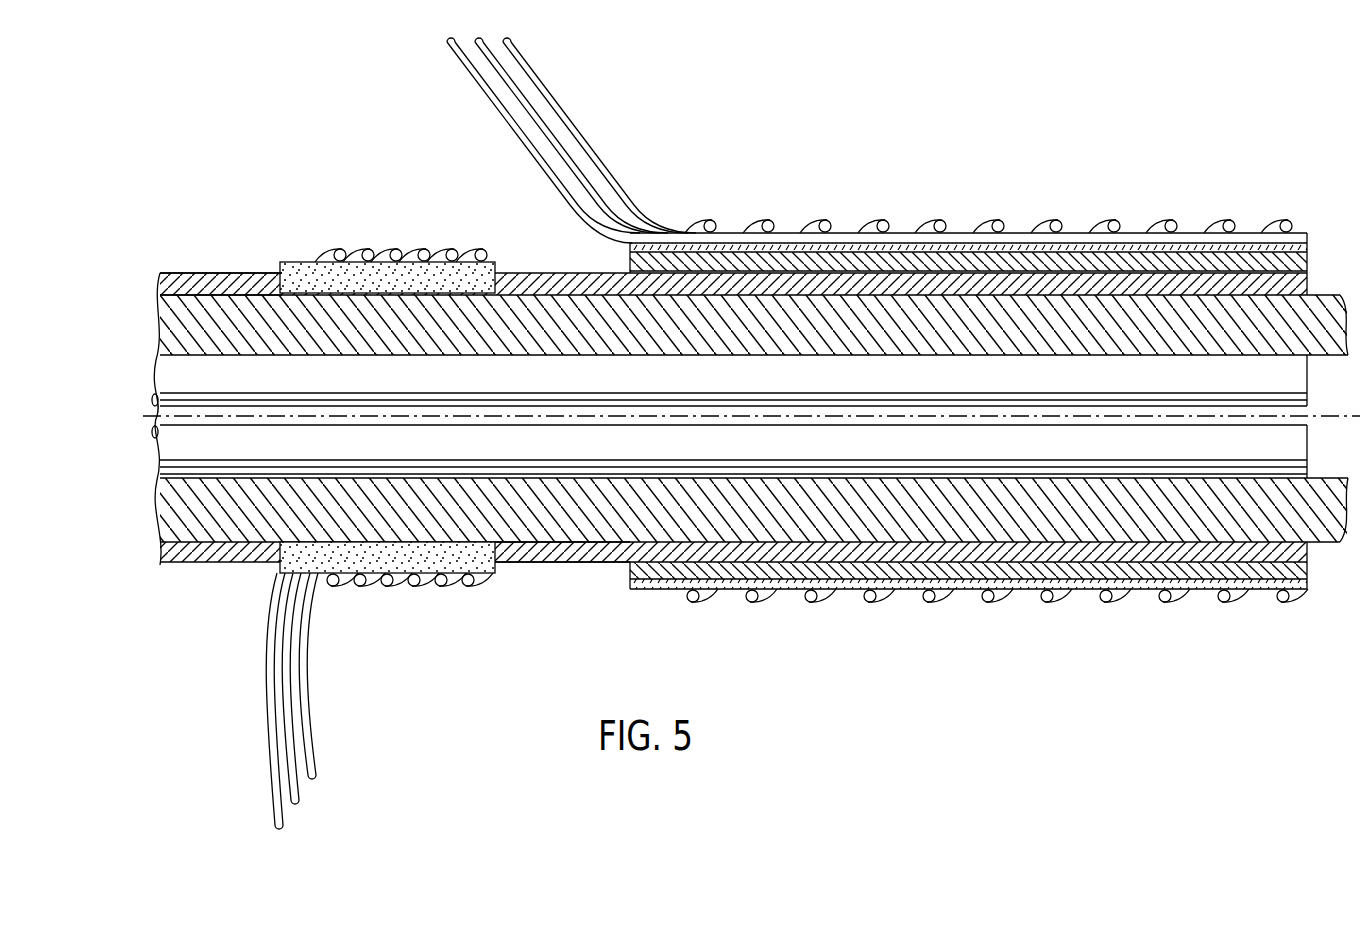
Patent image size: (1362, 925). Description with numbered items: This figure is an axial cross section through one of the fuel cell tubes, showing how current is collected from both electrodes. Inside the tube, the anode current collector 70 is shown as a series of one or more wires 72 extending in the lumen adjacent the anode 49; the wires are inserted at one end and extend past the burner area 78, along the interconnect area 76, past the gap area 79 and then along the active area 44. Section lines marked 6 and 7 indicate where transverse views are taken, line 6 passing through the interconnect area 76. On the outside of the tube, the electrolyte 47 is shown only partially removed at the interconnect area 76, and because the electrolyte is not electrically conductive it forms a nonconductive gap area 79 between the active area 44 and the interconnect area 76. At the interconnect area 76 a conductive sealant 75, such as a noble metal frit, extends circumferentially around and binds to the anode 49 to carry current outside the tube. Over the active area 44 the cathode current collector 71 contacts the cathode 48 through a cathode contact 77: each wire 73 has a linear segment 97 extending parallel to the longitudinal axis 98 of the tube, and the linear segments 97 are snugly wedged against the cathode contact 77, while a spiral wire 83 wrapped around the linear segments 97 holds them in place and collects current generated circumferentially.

The anode current collector 70 is at (143, 426).
The cathode current collector 71 is at (979, 372).
The wires 72 is at (460, 447).
The wire 73 is at (607, 182).
The conductive sealant 75 is at (268, 546).
The interconnect area 76 is at (492, 240).
The cathode contact 77 is at (1295, 245).
The burner area 78 is at (268, 265).
The gap area 79 is at (620, 578).
The spiral wire 83 is at (942, 228).
The linear segment 97 is at (737, 232).
The longitudinal axis 98 is at (1318, 412).
The active area 44 is at (979, 404).
The electrolyte 47 is at (1174, 272).
The cathode 48 is at (1232, 265).
The anode 49 is at (1075, 310).
The section line 6 is at (468, 157).
The section line 7 is at (903, 169).